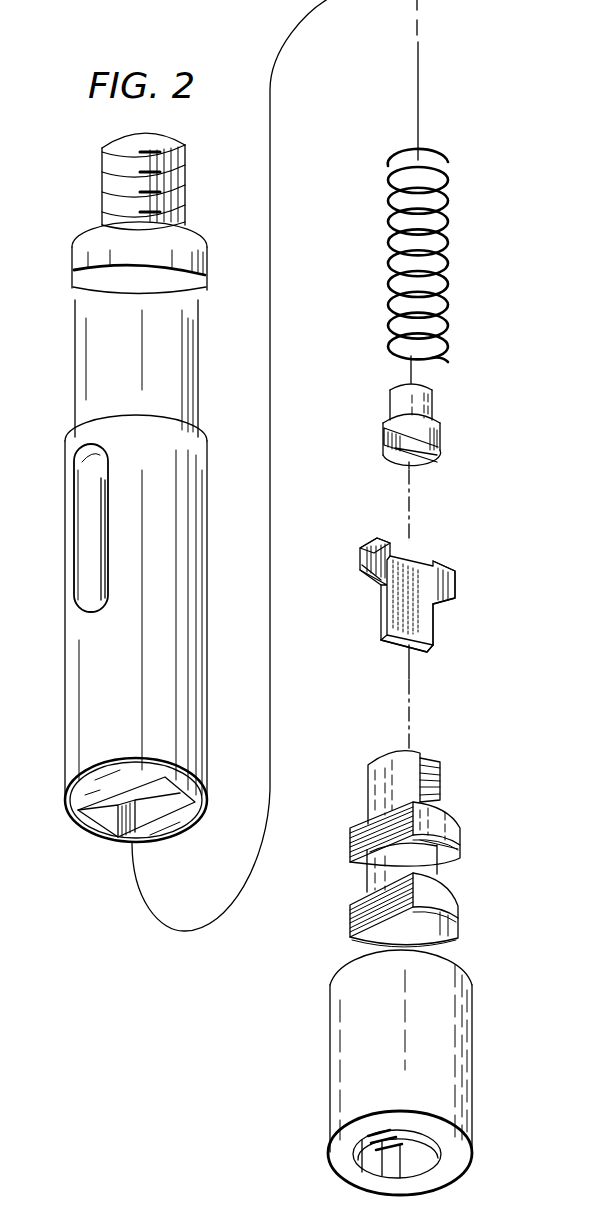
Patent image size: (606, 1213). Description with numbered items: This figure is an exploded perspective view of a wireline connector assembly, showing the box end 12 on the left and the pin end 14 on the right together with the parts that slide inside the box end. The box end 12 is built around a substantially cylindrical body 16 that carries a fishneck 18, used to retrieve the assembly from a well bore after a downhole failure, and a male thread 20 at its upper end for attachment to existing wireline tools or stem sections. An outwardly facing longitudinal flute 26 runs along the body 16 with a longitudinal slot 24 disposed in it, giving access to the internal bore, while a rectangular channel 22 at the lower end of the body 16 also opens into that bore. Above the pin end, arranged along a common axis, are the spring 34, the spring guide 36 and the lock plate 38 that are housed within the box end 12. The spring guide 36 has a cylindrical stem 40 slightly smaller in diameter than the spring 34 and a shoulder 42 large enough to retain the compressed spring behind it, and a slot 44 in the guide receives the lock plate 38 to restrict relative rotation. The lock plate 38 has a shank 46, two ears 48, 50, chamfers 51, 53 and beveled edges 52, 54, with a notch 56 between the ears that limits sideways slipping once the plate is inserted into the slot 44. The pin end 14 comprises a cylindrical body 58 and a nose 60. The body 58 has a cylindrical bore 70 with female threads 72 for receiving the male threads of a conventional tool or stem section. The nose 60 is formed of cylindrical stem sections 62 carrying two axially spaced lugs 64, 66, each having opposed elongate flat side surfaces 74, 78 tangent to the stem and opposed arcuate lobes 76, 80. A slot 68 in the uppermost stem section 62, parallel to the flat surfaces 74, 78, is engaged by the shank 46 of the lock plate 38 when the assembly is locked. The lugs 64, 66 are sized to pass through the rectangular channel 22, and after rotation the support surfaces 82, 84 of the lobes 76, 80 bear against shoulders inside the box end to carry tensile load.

The box end 12 is at (60, 652).
The pin end 14 is at (318, 1098).
The cylindrical body 16 is at (72, 743).
The fishneck 18 is at (82, 385).
The male thread 20 is at (182, 186).
The rectangular channel 22 is at (98, 822).
The longitudinal slot 24 is at (106, 512).
The longitudinal flute 26 is at (74, 526).
The spring 34 is at (386, 186).
The spring guide 36 is at (372, 422).
The lock plate 38 is at (366, 601).
The cylindrical stem 40 is at (393, 392).
The shoulder 42 is at (438, 420).
The slot 44 is at (382, 440).
The shank 46 is at (392, 620).
The ear 48 is at (364, 552).
The ear 50 is at (456, 590).
The chamfer 51 is at (368, 577).
The beveled edge 52 is at (372, 544).
The chamfer 53 is at (442, 604).
The beveled edge 54 is at (448, 568).
The notch 56 is at (416, 560).
The cylindrical body 58 is at (456, 1040).
The nose 60 is at (506, 747).
The cylindrical stem section 62 is at (372, 764).
The lug 64 is at (338, 916).
The lug 66 is at (340, 820).
The slot 68 is at (426, 766).
The cylindrical bore 70 is at (426, 1168).
The female thread 72 is at (422, 1148).
The flat side surface 74 is at (356, 920).
The arcuate lobe 76 is at (448, 900).
The flat side surface 78 is at (362, 822).
The arcuate lobe 80 is at (436, 820).
The support surface 82 is at (432, 934).
The support surface 84 is at (436, 838).